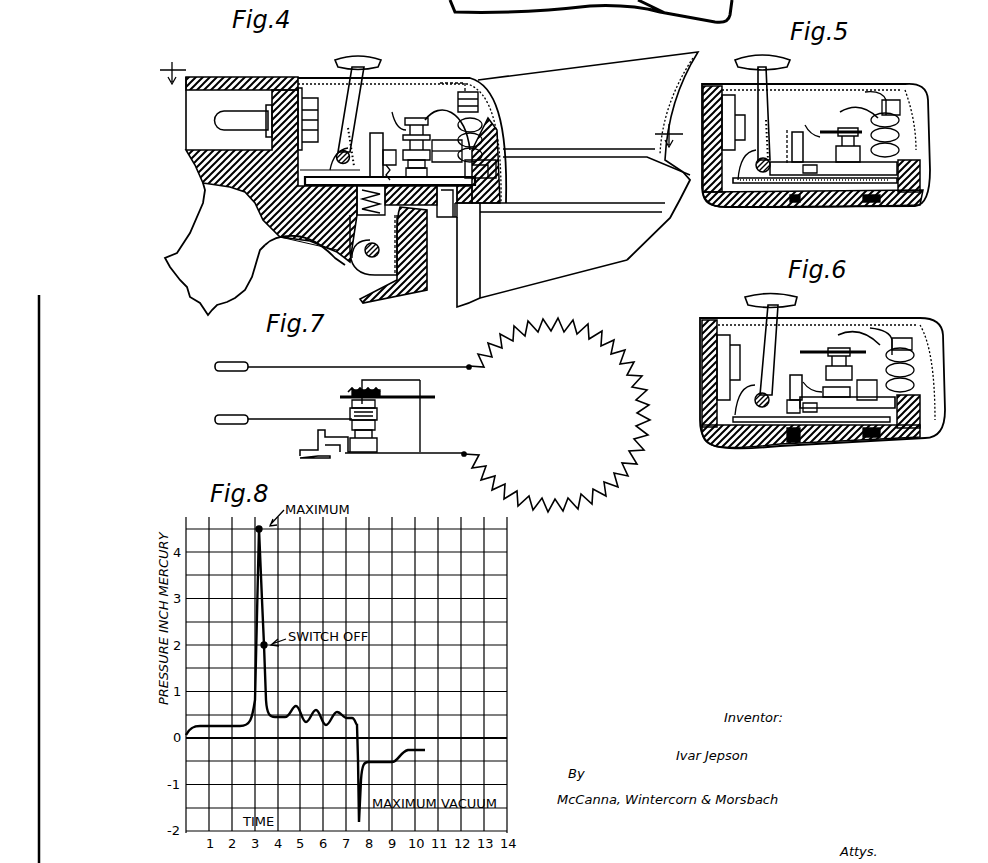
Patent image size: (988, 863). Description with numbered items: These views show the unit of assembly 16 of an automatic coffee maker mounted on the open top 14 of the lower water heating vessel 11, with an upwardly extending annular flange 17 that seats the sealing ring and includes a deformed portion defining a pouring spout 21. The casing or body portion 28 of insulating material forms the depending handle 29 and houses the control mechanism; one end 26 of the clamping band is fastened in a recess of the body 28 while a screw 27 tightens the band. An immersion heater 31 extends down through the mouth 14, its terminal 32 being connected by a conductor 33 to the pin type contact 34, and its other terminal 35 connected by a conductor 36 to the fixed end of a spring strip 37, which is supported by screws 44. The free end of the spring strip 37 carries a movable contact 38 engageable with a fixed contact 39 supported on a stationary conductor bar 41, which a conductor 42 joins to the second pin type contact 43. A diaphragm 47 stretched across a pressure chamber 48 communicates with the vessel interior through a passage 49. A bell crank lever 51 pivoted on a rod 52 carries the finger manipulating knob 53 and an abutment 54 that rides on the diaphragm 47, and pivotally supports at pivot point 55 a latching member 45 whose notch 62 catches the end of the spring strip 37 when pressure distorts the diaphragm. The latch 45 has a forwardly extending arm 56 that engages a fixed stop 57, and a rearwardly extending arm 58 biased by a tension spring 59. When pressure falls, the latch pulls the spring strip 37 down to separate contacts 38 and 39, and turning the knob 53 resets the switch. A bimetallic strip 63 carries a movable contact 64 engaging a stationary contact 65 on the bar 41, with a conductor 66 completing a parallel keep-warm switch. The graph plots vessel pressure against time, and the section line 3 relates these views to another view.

In FIG. 4, the section line 3- 3 is at (422, 97).
In FIG. 4, the lower water heating vessel 11 is at (405, 298).
In FIG. 4, the open top 14 is at (572, 223).
In FIG. 4, the unit of assembly 16 is at (413, 74).
In FIG. 5, the unit of assembly 16 is at (710, 203).
In FIG. 6, the unit of assembly 16 is at (695, 343).
In FIG. 4, the annular flange 17 is at (660, 130).
In FIG. 4, the pouring spout 21 is at (688, 74).
In FIG. 4, the band end 26 is at (372, 270).
In FIG. 4, the screw 27 is at (366, 255).
In FIG. 4, the casing or body portion 28 is at (311, 240).
In FIG. 6, the casing or body portion 28 is at (700, 376).
In FIG. 4, the depending handle 29 is at (202, 287).
In FIG. 4, the immersion heater 31 is at (473, 275).
In FIG. 7, the immersion heater 31 is at (636, 412).
In FIG. 4, the heater terminal 32 is at (478, 92).
In FIG. 7, the heater terminal 32 is at (470, 370).
In FIG. 4, the conductor 33 is at (452, 82).
In FIG. 5, the conductor 33 is at (868, 90).
In FIG. 6, the conductor 33 is at (873, 325).
In FIG. 7, the conductor 33 is at (342, 367).
In FIG. 4, the pin type contact 34 is at (215, 118).
In FIG. 7, the pin type contact 34 is at (232, 364).
In FIG. 4, the heater terminal 35 is at (475, 213).
In FIG. 7, the heater terminal 35 is at (465, 452).
In FIG. 7, the conductor 36 is at (442, 452).
In FIG. 4, the spring strip 37 is at (440, 178).
In FIG. 5, the spring strip 37 is at (855, 166).
In FIG. 6, the spring strip 37 is at (852, 404).
In FIG. 7, the spring strip 37 is at (375, 455).
In FIG. 4, the movable contact 38 is at (420, 177).
In FIG. 6, the movable contact 38 is at (834, 389).
In FIG. 7, the movable contact 38 is at (378, 441).
In FIG. 4, the fixed contact 39 is at (413, 166).
In FIG. 6, the fixed contact 39 is at (851, 393).
In FIG. 7, the fixed contact 39 is at (378, 424).
In FIG. 4, the stationary conductor bar 41 is at (406, 131).
In FIG. 5, the stationary conductor bar 41 is at (856, 146).
In FIG. 7, the stationary conductor bar 41 is at (378, 416).
In FIG. 7, the conductor 42 is at (262, 418).
In FIG. 7, the pin type contact 43 is at (222, 416).
In FIG. 4, the screws 44 is at (497, 160).
In FIG. 4, the latching member 45 is at (376, 133).
In FIG. 5, the latching member 45 is at (797, 133).
In FIG. 6, the latching member 45 is at (792, 375).
In FIG. 7, the latching member 45 is at (316, 432).
In FIG. 4, the diaphragm 47 is at (331, 251).
In FIG. 5, the diaphragm 47 is at (758, 210).
In FIG. 6, the diaphragm 47 is at (760, 437).
In FIG. 4, the pressure chamber 48 is at (262, 215).
In FIG. 5, the pressure chamber 48 is at (743, 205).
In FIG. 4, the passage 49 is at (446, 222).
In FIG. 4, the bell crank lever 51 is at (346, 88).
In FIG. 5, the bell crank lever 51 is at (773, 80).
In FIG. 6, the bell crank lever 51 is at (770, 343).
In FIG. 4, the rod 52 is at (330, 162).
In FIG. 5, the rod 52 is at (758, 166).
In FIG. 4, the finger manipulating knob 53 is at (362, 57).
In FIG. 4, the abutment 54 is at (380, 225).
In FIG. 5, the abutment 54 is at (792, 206).
In FIG. 6, the abutment 54 is at (772, 447).
In FIG. 5, the pivot point 55 is at (818, 169).
In FIG. 6, the pivot point 55 is at (795, 404).
In FIG. 4, the forwardly extending arm 56 is at (391, 150).
In FIG. 6, the forwardly extending arm 56 is at (812, 407).
In FIG. 4, the fixed stop 57 is at (379, 184).
In FIG. 6, the fixed stop 57 is at (815, 441).
In FIG. 5, the rearwardly extending arm 58 is at (780, 143).
In FIG. 4, the tension spring 59 is at (356, 140).
In FIG. 5, the tension spring 59 is at (773, 135).
In FIG. 4, the notch 62 is at (400, 115).
In FIG. 5, the notch 62 is at (808, 128).
In FIG. 6, the notch 62 is at (800, 385).
In FIG. 4, the bimetallic strip 63 is at (483, 118).
In FIG. 5, the bimetallic strip 63 is at (911, 116).
In FIG. 6, the bimetallic strip 63 is at (918, 345).
In FIG. 7, the bimetallic strip 63 is at (418, 388).
In FIG. 4, the movable contact 64 is at (447, 151).
In FIG. 7, the movable contact 64 is at (350, 398).
In FIG. 4, the stationary contact 65 is at (447, 156).
In FIG. 7, the stationary contact 65 is at (348, 410).
In FIG. 4, the conductor 66 is at (448, 108).
In FIG. 7, the conductor 66 is at (420, 430).